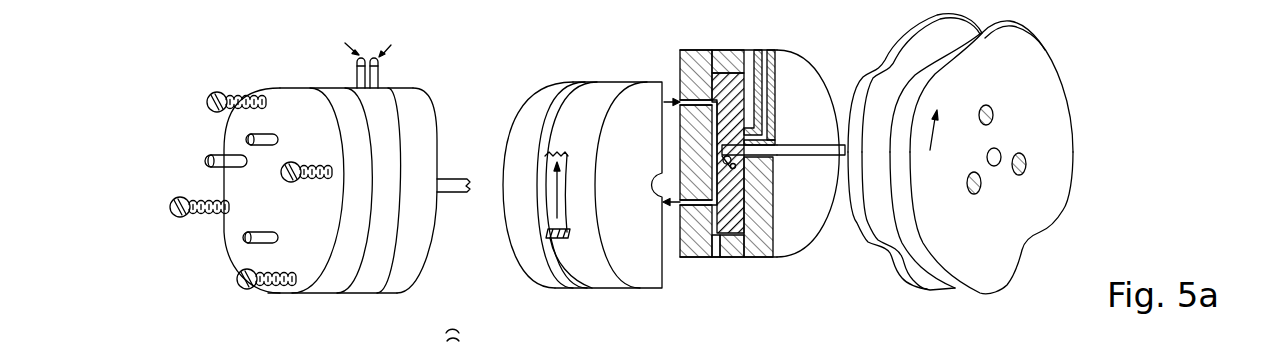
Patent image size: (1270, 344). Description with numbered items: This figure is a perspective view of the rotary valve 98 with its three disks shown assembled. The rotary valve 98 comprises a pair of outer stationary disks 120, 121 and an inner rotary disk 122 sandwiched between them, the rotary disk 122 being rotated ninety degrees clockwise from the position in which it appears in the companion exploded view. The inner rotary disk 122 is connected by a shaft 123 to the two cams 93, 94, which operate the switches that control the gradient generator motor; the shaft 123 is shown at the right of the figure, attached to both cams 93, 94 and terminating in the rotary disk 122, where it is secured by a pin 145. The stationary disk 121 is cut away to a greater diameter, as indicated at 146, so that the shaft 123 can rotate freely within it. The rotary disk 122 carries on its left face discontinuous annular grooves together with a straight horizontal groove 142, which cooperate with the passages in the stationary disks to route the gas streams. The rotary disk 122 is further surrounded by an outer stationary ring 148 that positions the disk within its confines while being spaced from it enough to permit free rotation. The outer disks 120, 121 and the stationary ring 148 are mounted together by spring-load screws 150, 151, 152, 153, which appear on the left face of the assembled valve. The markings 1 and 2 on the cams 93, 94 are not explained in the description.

The rotary valve 98 is at (266, 84).
The spring-load screw 152 is at (207, 98).
The spring-load screw 151 is at (170, 205).
The spring-load screw 150 is at (238, 274).
The spring-load screw 153 is at (298, 182).
The outer stationary disk 120 is at (305, 296).
The inner rotary disk 122 is at (345, 296).
The outer stationary disk 121 is at (385, 292).
The cut-away 146 is at (770, 143).
The pin 145 is at (738, 153).
The shaft 123 is at (845, 157).
The straight horizontal groove 142 is at (716, 206).
The outer stationary ring 148 is at (722, 246).
The cam 94 is at (942, 61).
The cam 93 is at (1028, 73).
The region one 1 is at (887, 217).
The region two 2 is at (938, 219).